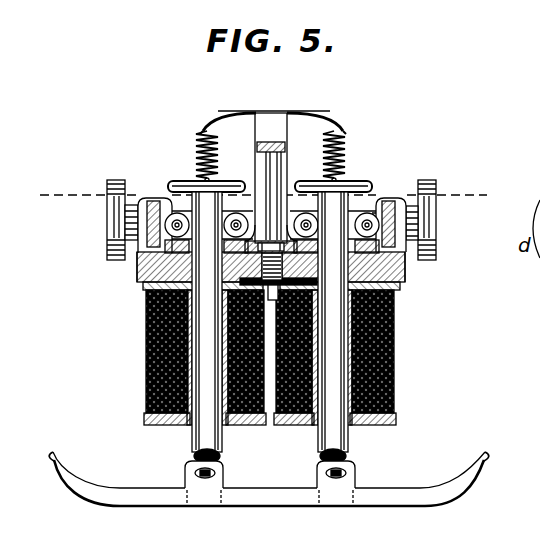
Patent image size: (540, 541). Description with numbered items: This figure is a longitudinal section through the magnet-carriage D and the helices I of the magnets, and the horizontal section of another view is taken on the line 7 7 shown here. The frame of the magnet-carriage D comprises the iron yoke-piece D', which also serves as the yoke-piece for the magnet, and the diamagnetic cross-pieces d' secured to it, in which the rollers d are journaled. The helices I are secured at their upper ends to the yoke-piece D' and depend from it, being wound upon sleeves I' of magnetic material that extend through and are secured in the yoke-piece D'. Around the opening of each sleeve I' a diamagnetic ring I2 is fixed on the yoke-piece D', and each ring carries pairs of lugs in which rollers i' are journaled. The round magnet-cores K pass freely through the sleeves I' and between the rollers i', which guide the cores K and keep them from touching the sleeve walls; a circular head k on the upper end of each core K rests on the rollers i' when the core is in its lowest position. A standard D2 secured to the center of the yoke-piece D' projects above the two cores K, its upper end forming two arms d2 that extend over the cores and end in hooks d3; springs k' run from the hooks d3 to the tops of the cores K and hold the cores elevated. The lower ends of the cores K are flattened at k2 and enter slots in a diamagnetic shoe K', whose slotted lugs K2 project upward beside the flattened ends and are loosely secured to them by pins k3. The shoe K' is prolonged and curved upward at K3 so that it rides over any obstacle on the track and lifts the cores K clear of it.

The section line 7 7 is at (259, 206).
The magnet-carriage D is at (216, 231).
The roller d is at (276, 203).
The cross-piece d' is at (280, 205).
The arm d2 is at (230, 119).
The hook d3 is at (204, 126).
The yoke-piece D' is at (293, 288).
The standard D2 is at (275, 143).
The helix I is at (254, 357).
The sleeve I' is at (269, 372).
The ring I2 is at (140, 264).
The roller i' is at (272, 225).
The circular head k is at (270, 175).
The spring k' is at (272, 147).
The flattened end k2 is at (193, 457).
The pin k3 is at (320, 476).
The magnet-core K is at (265, 324).
The shoe K' is at (269, 494).
The slotted lug K2 is at (191, 442).
The upwardly-curved end K3 is at (56, 455).